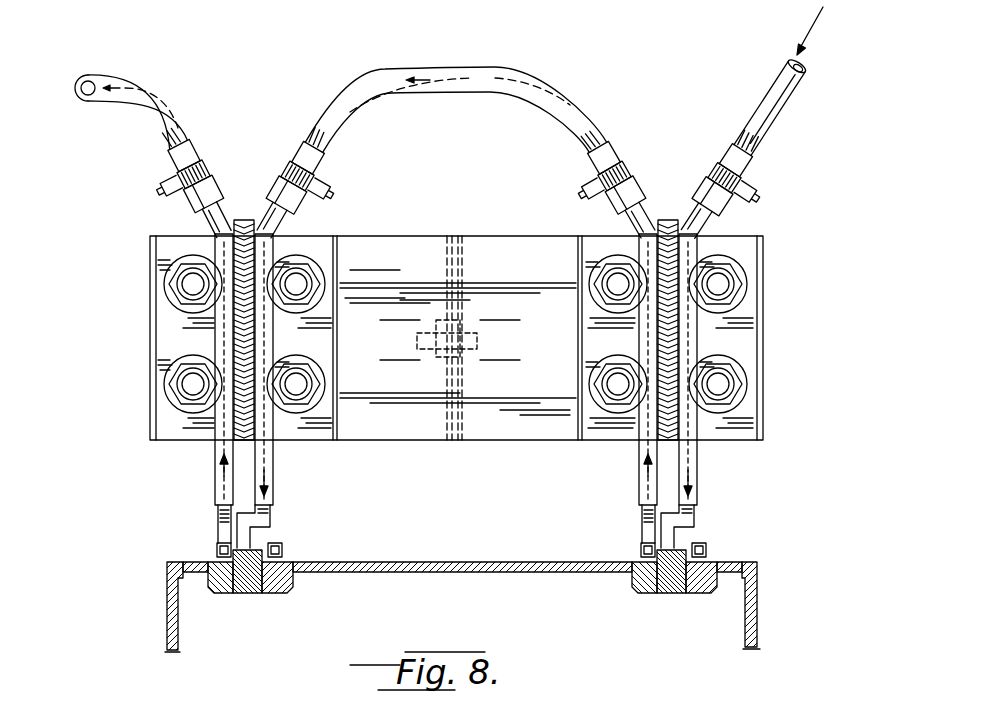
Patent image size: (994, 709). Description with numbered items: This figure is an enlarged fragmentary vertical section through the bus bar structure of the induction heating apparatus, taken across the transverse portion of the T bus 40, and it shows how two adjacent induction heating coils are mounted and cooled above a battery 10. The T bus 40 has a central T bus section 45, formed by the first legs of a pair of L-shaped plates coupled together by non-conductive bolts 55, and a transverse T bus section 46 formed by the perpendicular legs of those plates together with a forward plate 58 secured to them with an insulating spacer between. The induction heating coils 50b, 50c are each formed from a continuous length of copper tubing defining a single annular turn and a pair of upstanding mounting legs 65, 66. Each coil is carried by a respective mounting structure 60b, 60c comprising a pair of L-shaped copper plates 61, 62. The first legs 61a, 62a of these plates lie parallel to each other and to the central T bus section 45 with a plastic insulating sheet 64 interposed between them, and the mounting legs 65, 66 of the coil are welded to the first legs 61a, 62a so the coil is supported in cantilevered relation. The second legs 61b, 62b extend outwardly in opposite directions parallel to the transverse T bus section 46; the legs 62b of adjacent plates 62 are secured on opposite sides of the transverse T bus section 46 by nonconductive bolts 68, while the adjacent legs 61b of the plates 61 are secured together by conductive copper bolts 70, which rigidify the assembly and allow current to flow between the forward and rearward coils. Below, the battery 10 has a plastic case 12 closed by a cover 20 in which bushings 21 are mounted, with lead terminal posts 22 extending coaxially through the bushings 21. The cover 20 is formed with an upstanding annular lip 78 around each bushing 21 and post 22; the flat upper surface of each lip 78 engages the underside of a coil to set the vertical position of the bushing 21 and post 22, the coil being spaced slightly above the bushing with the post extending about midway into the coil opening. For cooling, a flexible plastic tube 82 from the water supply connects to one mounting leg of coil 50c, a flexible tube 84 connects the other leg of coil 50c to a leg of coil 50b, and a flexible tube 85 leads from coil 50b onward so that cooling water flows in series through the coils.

The lead acid storage battery 10 is at (158, 632).
The case 12 is at (757, 632).
The cover 20 is at (523, 562).
The bushing 21 is at (272, 593).
The lead terminal post 22 is at (245, 552).
The T bus 40 is at (375, 158).
The central T bus section 45 is at (470, 280).
The transverse T bus section 46 is at (437, 242).
The induction heating coil 50b is at (280, 546).
The induction heating coil 50c is at (702, 548).
The non-conductive bolts 55 is at (472, 346).
The forward plate 58 is at (437, 428).
The mounting structure 60b is at (148, 378).
The mounting structure 60c is at (770, 314).
The L-shaped copper plate 61 is at (152, 310).
The first leg 61a is at (228, 268).
The second leg 61b is at (165, 325).
The L-shaped copper plate 62 is at (340, 347).
The first leg 62a is at (258, 265).
The second leg 62b is at (328, 430).
The plastic insulating sheet 64 is at (240, 232).
The upstanding mounting leg 65 is at (215, 470).
The upstanding mounting leg 66 is at (274, 468).
The nonconductive bolts 68 is at (322, 290).
The conductive bolts 70 is at (178, 287).
The upstanding annular lip 78 is at (283, 560).
The flexible plastic tube 82 is at (763, 92).
The flexible tube 84 is at (487, 68).
The flexible tube 85 is at (122, 82).